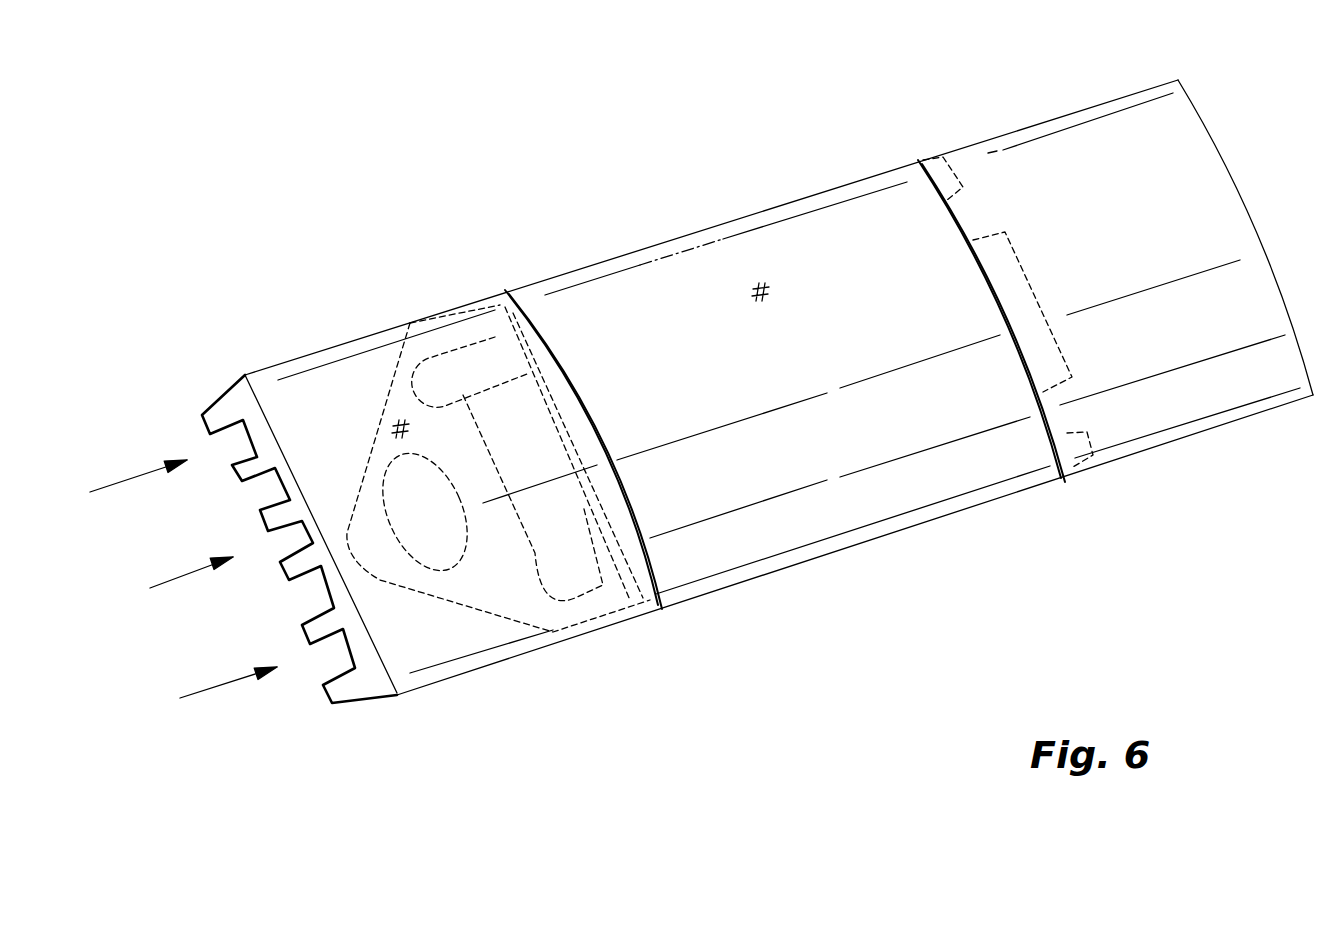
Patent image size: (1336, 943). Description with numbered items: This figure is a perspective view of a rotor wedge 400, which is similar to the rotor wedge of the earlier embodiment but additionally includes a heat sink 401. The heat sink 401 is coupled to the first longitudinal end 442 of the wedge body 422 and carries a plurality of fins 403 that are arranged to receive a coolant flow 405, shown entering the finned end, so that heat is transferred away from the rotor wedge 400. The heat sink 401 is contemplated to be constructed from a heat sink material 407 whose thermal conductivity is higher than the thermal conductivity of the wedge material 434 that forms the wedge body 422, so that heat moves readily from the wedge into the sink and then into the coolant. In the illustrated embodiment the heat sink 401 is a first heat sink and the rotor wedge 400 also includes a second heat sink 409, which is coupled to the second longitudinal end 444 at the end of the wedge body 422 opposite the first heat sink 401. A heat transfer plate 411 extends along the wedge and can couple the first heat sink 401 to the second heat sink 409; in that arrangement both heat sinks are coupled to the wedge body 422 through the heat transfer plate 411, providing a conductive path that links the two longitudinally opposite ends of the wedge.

The rotor wedge 400 is at (277, 143).
The heat sink 401 is at (273, 372).
The fins 403 is at (217, 410).
The coolant flow 405 is at (125, 480).
The heat sink material 407 is at (753, 293).
The second heat sink 409 is at (1202, 157).
The heat transfer plate 411 is at (863, 490).
The wedge body 422 is at (493, 603).
The wedge material 434 is at (378, 423).
The first longitudinal end 442 is at (393, 428).
The second longitudinal end 444 is at (1025, 238).